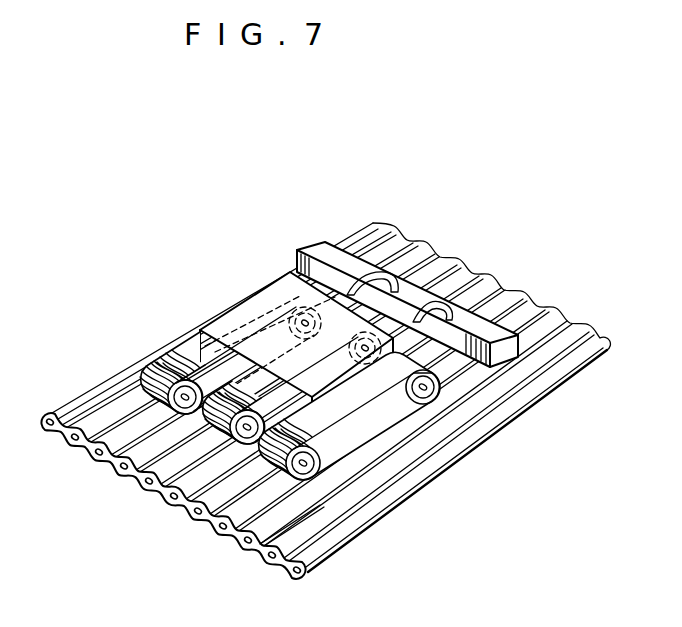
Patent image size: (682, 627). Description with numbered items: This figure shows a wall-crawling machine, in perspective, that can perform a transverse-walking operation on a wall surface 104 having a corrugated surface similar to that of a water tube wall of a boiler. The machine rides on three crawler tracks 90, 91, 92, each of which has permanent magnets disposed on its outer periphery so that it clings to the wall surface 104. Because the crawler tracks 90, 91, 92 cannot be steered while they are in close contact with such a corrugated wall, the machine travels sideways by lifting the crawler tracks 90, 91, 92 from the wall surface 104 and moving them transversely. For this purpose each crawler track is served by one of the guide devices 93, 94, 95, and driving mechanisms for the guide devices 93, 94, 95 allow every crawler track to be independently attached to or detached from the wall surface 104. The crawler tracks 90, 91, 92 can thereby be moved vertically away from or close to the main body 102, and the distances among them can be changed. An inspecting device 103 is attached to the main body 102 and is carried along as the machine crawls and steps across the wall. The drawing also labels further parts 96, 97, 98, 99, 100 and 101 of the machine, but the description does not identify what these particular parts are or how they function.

The crawler track 90 is at (67, 435).
The crawler track 91 is at (140, 483).
The crawler track 92 is at (207, 523).
The guide device 93 is at (157, 360).
The guide device 94 is at (196, 370).
The guide device 95 is at (350, 443).
The plate edge opening 96 is at (110, 463).
The rear roller 97 is at (262, 323).
The plate edge opening 98 is at (173, 500).
The rear roller 99 is at (327, 317).
The corrugation ridge 100 is at (285, 498).
The rear pulley 101 is at (440, 390).
The main body 102 is at (222, 320).
The inspecting device 103 is at (322, 248).
The wall surface 104 is at (567, 365).